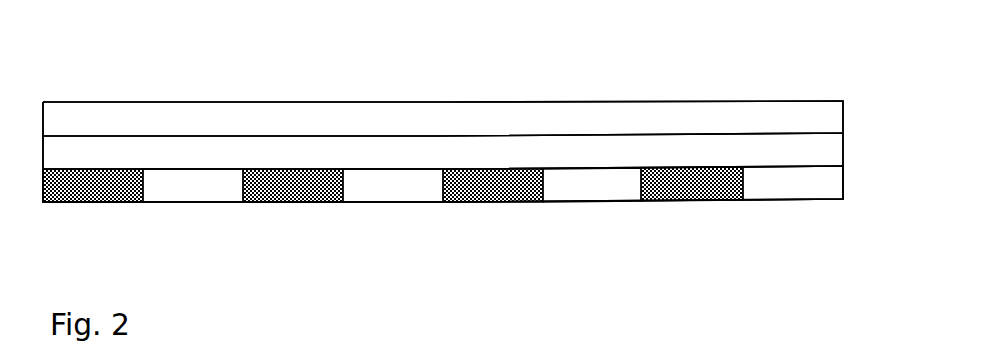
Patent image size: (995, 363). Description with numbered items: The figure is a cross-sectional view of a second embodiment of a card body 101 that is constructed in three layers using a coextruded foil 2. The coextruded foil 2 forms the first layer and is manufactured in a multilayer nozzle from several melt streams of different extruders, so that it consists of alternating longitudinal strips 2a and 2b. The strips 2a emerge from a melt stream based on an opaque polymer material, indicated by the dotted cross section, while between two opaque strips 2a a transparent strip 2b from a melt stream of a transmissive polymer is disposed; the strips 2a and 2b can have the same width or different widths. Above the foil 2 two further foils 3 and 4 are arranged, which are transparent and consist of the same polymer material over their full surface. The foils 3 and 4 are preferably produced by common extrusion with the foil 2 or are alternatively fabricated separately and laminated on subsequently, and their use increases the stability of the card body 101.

The card body 101 is at (702, 70).
The foil 4 is at (843, 113).
The foil 3 is at (843, 148).
The coextruded foil 2 is at (843, 180).
The opaque strips 2a is at (93, 202).
The transparent strips 2b is at (193, 202).